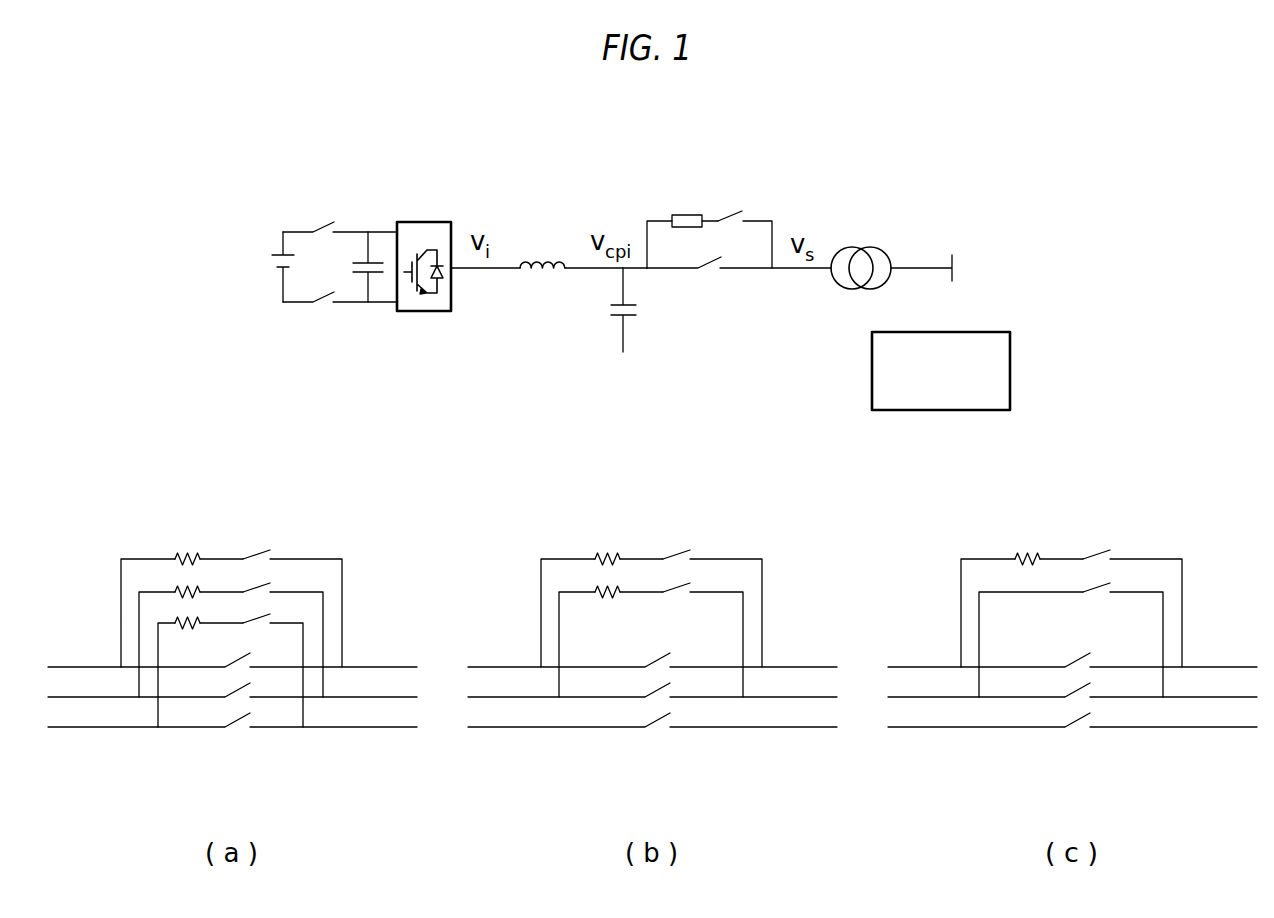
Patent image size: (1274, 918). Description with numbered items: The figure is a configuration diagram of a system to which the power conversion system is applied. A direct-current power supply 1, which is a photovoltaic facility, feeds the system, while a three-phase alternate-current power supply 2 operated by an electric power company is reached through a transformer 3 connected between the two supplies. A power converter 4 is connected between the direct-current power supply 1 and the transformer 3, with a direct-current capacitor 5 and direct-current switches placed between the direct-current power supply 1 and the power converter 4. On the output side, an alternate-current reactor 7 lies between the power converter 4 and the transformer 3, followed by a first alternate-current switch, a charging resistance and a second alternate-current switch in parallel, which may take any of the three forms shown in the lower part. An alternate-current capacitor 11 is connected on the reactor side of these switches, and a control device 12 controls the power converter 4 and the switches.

The direct-current power supply 1 is at (272, 266).
The alternate-current power supply 2 is at (953, 254).
The transformer 3 is at (868, 247).
The power converter 4 is at (425, 222).
The direct-current capacitor 5 is at (360, 258).
The alternate-current reactor 7 is at (538, 277).
The alternate-current capacitor 11 is at (612, 318).
The control device 12 is at (871, 371).